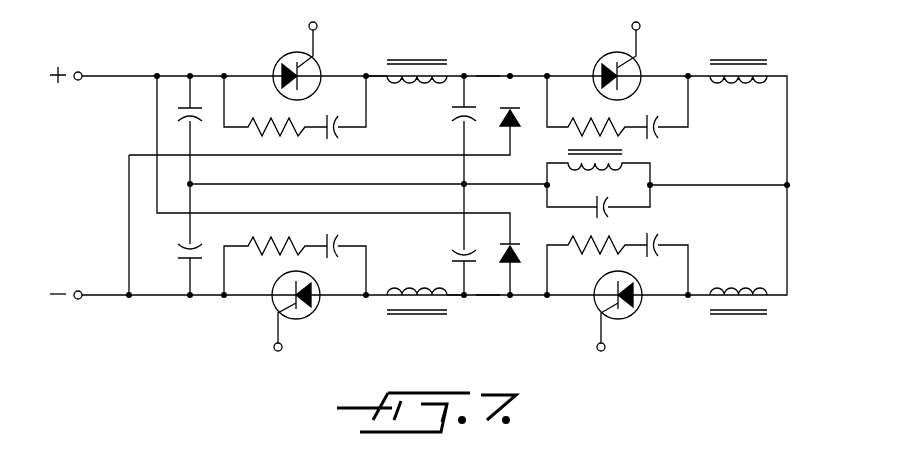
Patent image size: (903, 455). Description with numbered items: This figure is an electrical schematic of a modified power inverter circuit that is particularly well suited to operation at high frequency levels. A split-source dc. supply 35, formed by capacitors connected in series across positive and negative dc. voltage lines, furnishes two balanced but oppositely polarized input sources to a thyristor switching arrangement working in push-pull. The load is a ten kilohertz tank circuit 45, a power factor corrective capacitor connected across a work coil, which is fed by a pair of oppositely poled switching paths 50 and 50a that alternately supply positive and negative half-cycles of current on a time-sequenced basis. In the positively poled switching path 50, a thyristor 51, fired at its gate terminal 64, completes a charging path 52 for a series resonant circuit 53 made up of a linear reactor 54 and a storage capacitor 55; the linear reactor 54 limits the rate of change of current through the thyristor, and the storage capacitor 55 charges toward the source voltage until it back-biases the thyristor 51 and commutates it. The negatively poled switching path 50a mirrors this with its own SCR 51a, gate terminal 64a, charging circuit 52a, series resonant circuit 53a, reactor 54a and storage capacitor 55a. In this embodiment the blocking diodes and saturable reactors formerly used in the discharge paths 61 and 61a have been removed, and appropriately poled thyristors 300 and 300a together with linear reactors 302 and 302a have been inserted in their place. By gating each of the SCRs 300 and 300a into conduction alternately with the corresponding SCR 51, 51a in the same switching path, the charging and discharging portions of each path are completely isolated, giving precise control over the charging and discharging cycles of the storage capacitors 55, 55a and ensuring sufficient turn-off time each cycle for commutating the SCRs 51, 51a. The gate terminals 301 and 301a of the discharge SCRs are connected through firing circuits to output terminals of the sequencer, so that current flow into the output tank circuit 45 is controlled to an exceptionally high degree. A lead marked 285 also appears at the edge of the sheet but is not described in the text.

The split-source dc. supply 35 is at (122, 142).
The tank circuit 45 is at (632, 178).
The positively poled switching path 50 is at (492, 58).
The negatively poled switching path 50a is at (484, 318).
The thyristor 51 is at (281, 55).
The negatively poled SCR 51a is at (303, 318).
The charging path 52 is at (204, 75).
The charging circuit 52a is at (210, 297).
The series resonant circuit 53 is at (440, 93).
The series resonant circuit 53a is at (450, 285).
The linear reactor 54 is at (420, 72).
The reactor 54a is at (425, 316).
The storage capacitor 55 is at (457, 118).
The storage capacitor 55a is at (458, 250).
The discharge path 61 is at (530, 74).
The discharge path 61a is at (528, 297).
The gate terminal 64 is at (317, 23).
The gate terminal 64a is at (275, 350).
The lead 285 is at (832, 0).
The thyristor (SCR) 300 is at (638, 62).
The thyristor (SCR) 300a is at (632, 316).
The gate terminal 301 is at (640, 24).
The gate terminal 301a is at (604, 352).
The linear reactor 302 is at (740, 80).
The linear reactor 302a is at (735, 290).